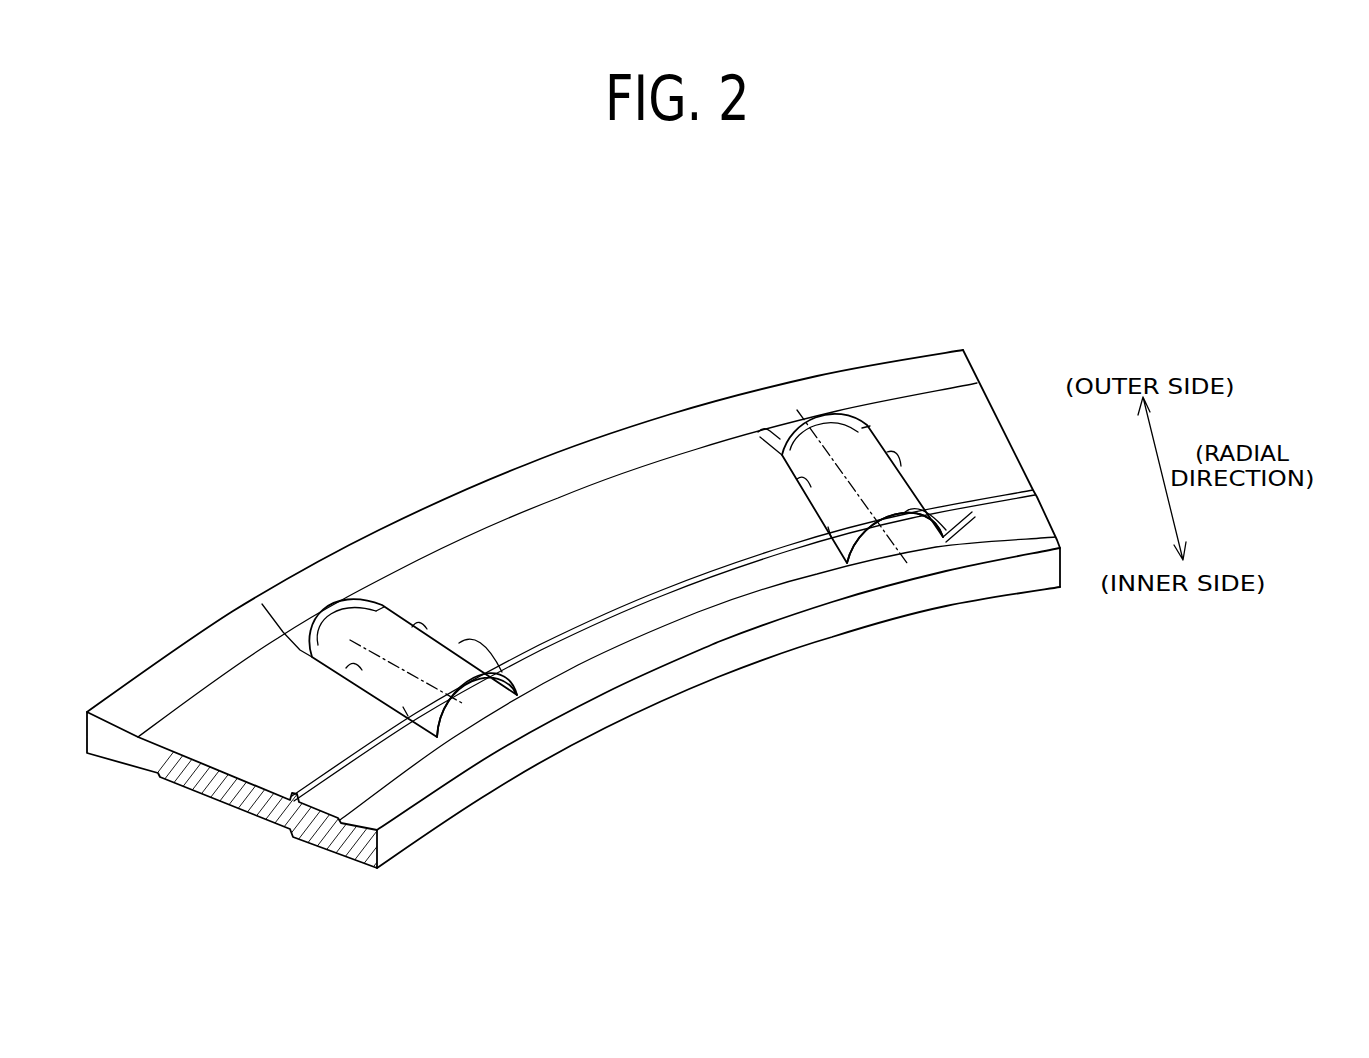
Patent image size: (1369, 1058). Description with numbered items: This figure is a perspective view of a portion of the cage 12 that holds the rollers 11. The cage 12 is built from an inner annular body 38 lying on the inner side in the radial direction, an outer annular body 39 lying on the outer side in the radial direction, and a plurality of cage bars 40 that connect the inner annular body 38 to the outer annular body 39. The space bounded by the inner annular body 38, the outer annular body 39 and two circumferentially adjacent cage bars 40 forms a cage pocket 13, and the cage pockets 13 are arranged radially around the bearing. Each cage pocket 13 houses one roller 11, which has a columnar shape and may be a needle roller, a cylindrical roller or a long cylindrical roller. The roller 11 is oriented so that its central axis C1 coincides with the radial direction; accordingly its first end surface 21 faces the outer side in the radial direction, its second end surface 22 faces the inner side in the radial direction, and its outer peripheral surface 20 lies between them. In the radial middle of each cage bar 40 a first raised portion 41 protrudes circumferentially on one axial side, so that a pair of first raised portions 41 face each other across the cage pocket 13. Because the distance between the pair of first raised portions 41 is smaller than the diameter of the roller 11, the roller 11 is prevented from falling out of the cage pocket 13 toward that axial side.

The roller 11 is at (387, 598).
The cage 12 is at (628, 411).
The cage pocket 13 is at (346, 583).
The outer peripheral surface 20 is at (523, 640).
The first end surface 21 is at (303, 620).
The second end surface 22 is at (487, 697).
The inner annular body 38 is at (732, 657).
The outer annular body 39 is at (530, 456).
The cage bar 40 is at (690, 470).
The first raised portion 41 is at (413, 625).
The central axis of roller C1 is at (313, 630).